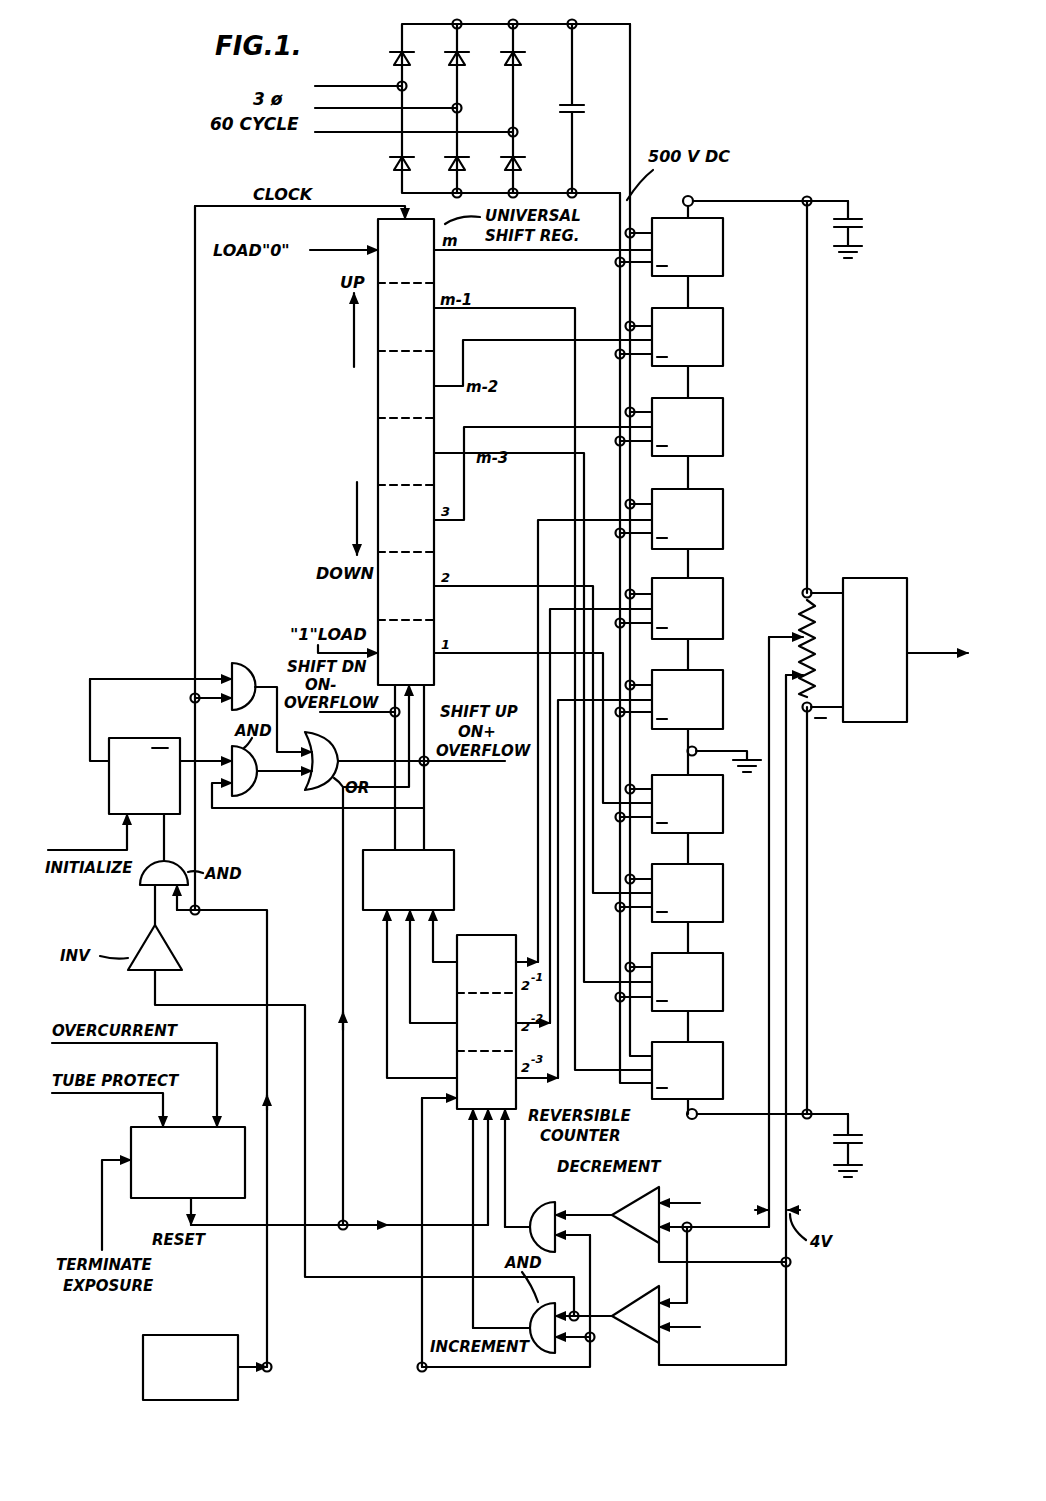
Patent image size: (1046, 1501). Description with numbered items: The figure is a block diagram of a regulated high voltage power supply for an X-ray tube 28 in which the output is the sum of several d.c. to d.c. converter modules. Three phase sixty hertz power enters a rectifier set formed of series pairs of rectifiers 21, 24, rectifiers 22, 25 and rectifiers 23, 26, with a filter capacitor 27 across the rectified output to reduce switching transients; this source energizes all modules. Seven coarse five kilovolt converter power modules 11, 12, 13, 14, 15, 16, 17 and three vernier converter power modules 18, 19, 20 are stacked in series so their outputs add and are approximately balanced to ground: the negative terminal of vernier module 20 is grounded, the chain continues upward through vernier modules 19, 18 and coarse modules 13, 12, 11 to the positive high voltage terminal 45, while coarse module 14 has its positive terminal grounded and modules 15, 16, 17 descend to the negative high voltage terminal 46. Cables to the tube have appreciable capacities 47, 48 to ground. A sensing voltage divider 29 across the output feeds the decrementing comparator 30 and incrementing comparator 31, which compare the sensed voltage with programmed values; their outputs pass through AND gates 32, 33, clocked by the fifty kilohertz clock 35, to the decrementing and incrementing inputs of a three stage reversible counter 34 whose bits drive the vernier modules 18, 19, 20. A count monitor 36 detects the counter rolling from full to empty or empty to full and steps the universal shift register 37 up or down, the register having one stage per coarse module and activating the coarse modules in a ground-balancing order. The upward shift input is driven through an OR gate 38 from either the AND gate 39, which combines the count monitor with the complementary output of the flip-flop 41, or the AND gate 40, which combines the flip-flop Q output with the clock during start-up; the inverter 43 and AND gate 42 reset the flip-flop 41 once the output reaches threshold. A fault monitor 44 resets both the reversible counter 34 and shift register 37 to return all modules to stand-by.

The coarse converter power module 11 is at (724, 250).
The coarse converter power module 12 is at (724, 340).
The coarse converter power module 13 is at (724, 427).
The coarse converter power module 14 is at (724, 803).
The coarse converter power module 15 is at (724, 893).
The coarse converter power module 16 is at (724, 982).
The coarse converter power module 17 is at (724, 1070).
The vernier converter power module 18 is at (724, 520).
The vernier converter power module 19 is at (724, 600).
The vernier converter power module 20 is at (724, 692).
The rectifier 21 is at (391, 57).
The rectifier 22 is at (447, 60).
The rectifier 23 is at (503, 60).
The rectifier 24 is at (410, 163).
The rectifier 25 is at (466, 163).
The rectifier 26 is at (522, 163).
The filter capacitor 27 is at (585, 110).
The X-ray tube 28 is at (869, 578).
The high voltage sensing voltage divider 29 is at (800, 632).
The decrementing comparator 30 is at (630, 1203).
The incrementing comparator 31 is at (630, 1300).
The AND gate 32 is at (546, 1207).
The AND gate 33 is at (534, 1322).
The reversible counter 34 is at (487, 935).
The clock 35 is at (200, 1335).
The count monitor 36 is at (456, 871).
The universal shift register 37 is at (437, 535).
The OR gate 38 is at (334, 748).
The AND gate 39 is at (253, 788).
The AND gate 40 is at (238, 670).
The flip-flop 41 is at (145, 738).
The AND gate 42 is at (140, 890).
The inverter 43 is at (182, 958).
The fault monitor 44 is at (233, 1127).
The positive high voltage terminal 45 is at (683, 200).
The negative high voltage terminal 46 is at (687, 1115).
The cable capacity 47 is at (855, 225).
The cable capacity 48 is at (864, 1140).